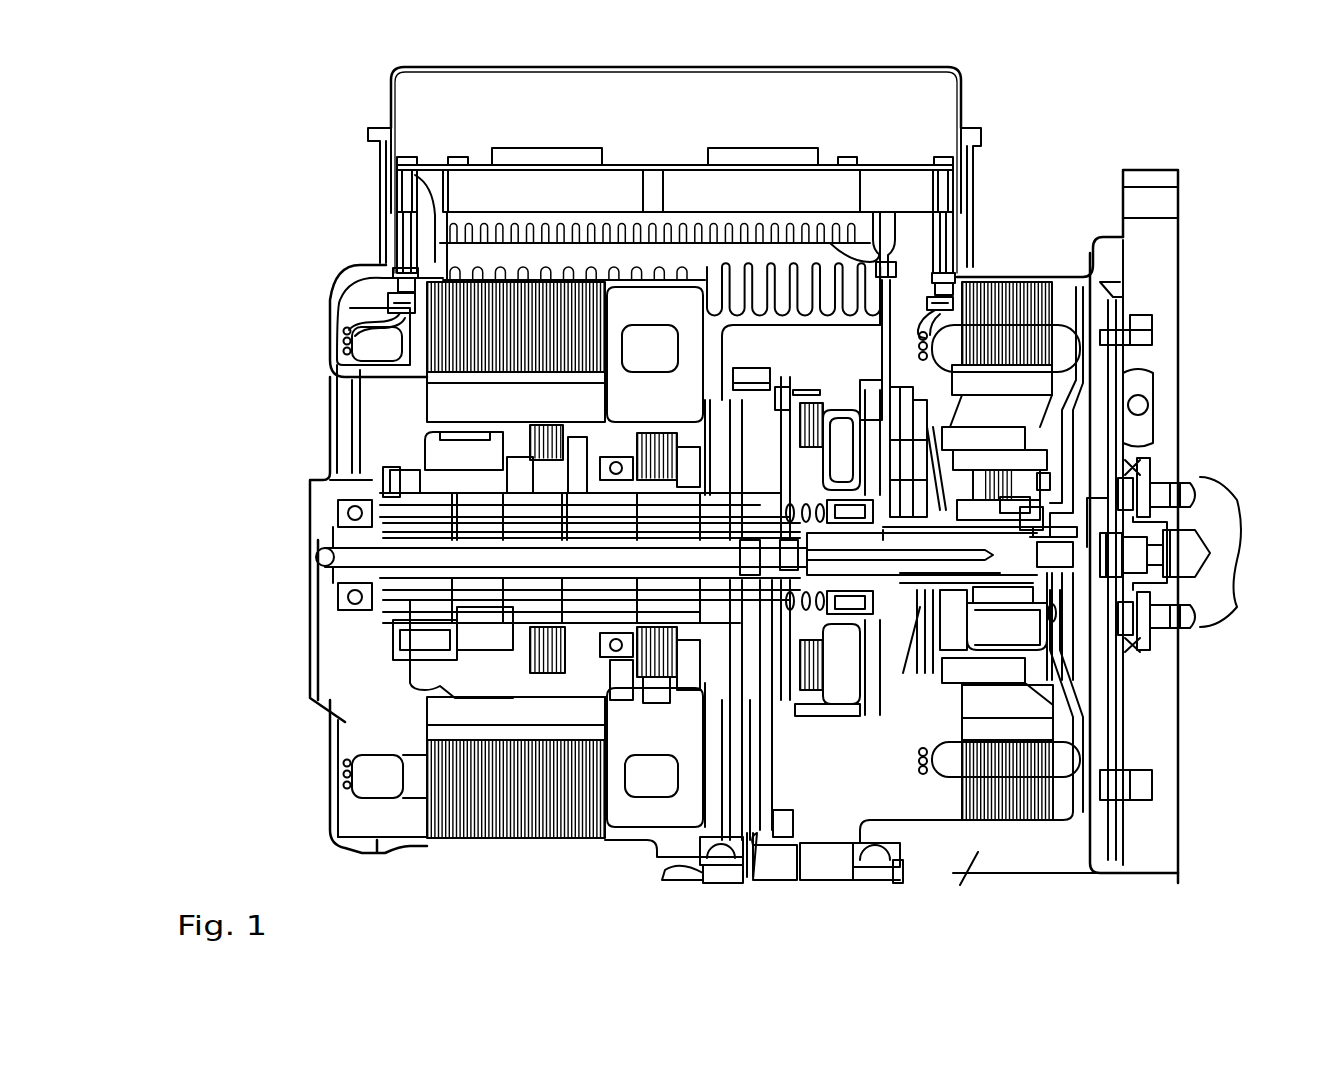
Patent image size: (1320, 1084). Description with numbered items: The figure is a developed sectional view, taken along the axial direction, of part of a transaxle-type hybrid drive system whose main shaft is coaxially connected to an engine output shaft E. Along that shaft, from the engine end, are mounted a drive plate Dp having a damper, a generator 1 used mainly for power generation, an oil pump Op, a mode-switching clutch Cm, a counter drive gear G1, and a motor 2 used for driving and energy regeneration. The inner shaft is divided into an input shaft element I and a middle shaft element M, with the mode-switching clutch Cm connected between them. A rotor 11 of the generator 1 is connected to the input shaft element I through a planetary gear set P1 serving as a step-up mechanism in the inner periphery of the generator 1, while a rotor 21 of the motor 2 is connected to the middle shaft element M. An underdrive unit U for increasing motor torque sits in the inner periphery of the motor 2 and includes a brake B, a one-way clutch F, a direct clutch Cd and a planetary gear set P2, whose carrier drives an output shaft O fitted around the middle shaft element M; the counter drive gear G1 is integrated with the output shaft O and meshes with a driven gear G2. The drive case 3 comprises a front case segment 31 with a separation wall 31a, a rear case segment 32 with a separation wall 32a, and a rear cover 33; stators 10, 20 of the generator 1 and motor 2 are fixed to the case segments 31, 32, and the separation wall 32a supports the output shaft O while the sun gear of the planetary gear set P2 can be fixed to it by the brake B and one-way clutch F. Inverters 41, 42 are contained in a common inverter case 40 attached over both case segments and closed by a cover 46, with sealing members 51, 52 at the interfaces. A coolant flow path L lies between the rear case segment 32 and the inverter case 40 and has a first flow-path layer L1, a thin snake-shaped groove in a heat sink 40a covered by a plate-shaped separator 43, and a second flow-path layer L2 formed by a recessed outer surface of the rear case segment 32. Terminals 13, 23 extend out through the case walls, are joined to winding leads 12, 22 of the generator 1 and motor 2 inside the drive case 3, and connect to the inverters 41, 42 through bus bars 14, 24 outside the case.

The generator 1 is at (1032, 268).
The motor 2 is at (507, 845).
The drive case 3 is at (1155, 260).
The stator 10 is at (962, 785).
The rotor 11 is at (975, 730).
The winding lead 12 is at (890, 375).
The terminal 13 is at (947, 230).
The bus bar 14 is at (903, 162).
The stator 20 is at (608, 311).
The rotor 21 is at (590, 403).
The winding lead 22 is at (337, 297).
The terminal 23 is at (405, 232).
The bus bar 24 is at (433, 160).
The front case segment 31 is at (1110, 237).
The separation wall 31a is at (1133, 283).
The rear case segment 32 is at (628, 840).
The separation wall 32a is at (710, 795).
The rear cover 33 is at (345, 278).
The inverter case 40 is at (968, 178).
The heat sink 40a is at (878, 222).
The inverter 41 is at (683, 172).
The inverter 42 is at (617, 168).
The separator 43 is at (880, 262).
The cover 46 is at (967, 102).
The sealing member 51 is at (400, 176).
The sealing member 52 is at (380, 234).
The flow path L is at (660, 288).
The first flow-path layer L1 is at (748, 216).
The second flow-path layer L2 is at (733, 282).
The middle shaft element M is at (322, 535).
The planetary gear set P1 is at (1037, 450).
The planetary gear set P2 is at (455, 425).
The output shaft O is at (497, 607).
The underdrive unit U is at (435, 686).
The direct clutch Cd is at (555, 695).
The one-way clutch F is at (620, 702).
The brake B is at (660, 700).
The counter drive gear G1 is at (770, 380).
The driven gear G2 is at (762, 775).
The mode-switching clutch Cm is at (836, 718).
The oil pump Op is at (957, 380).
The drive plate Dp is at (1162, 374).
The engine output shaft E is at (1213, 505).
The input shaft element I is at (975, 573).